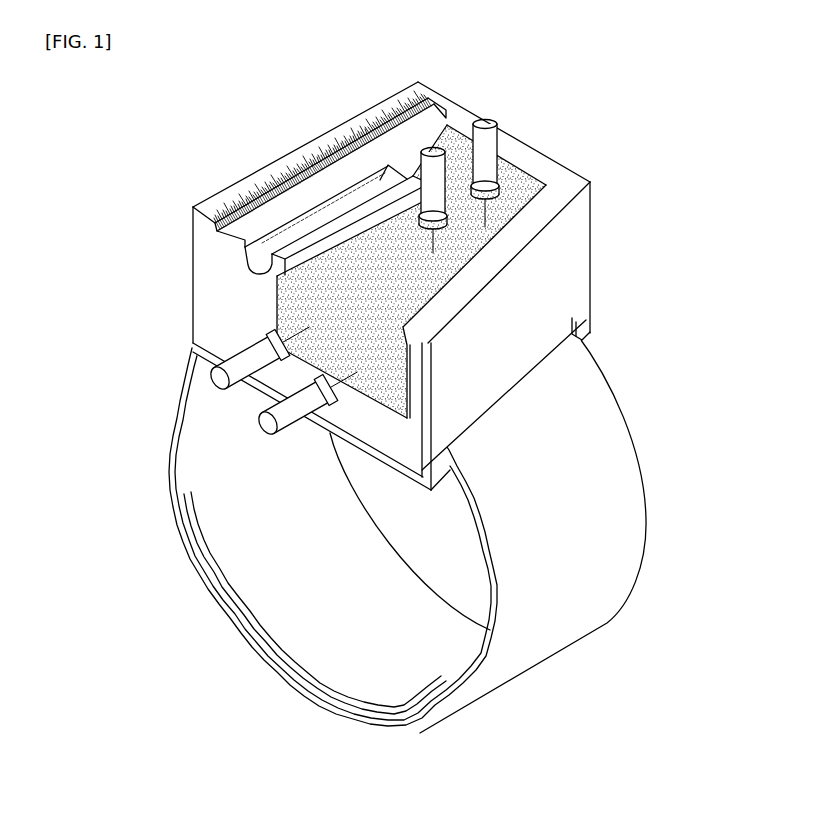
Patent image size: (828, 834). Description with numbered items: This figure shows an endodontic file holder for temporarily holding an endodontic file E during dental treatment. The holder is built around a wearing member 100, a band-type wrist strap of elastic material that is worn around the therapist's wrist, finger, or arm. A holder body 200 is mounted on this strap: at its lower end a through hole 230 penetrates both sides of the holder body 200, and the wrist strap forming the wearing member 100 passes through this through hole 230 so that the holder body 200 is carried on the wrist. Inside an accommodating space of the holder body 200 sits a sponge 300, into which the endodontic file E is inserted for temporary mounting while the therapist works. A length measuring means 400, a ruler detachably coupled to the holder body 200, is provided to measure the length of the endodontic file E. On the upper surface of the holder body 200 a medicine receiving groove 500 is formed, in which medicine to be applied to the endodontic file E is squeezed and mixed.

The wearing member 100 is at (623, 472).
The holder body 200 is at (596, 249).
The through hole 230 is at (574, 322).
The sponge 300 is at (522, 188).
The length measuring means 400 is at (266, 172).
The medicine receiving groove 500 is at (260, 262).
The endodontic file E is at (492, 140).